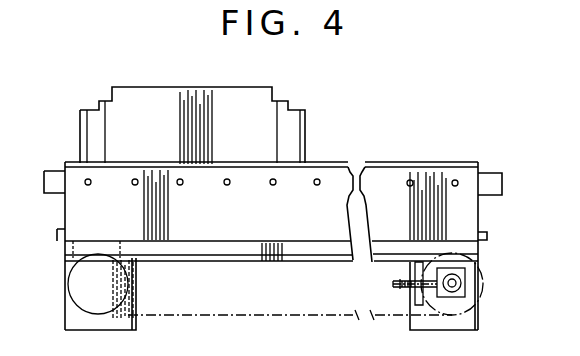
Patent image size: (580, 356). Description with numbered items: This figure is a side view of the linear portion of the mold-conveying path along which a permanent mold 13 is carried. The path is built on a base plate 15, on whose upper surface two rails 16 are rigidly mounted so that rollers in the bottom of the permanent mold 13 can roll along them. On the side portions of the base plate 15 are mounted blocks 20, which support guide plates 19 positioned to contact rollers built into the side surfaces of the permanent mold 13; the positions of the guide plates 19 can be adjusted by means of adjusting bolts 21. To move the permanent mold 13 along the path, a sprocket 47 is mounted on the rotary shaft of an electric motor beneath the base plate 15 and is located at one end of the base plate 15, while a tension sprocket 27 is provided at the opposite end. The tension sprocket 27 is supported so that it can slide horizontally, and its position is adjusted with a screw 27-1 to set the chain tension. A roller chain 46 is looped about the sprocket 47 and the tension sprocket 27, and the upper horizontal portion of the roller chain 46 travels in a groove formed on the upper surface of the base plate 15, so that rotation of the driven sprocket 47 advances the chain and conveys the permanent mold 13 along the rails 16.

The permanent mold 13 is at (186, 97).
The base plate 15 is at (243, 246).
The rails 16 is at (487, 231).
The guide plates 19 is at (492, 173).
The blocks 20 is at (465, 197).
The adjusting bolts 21 is at (319, 179).
The tension sprocket 27 is at (470, 307).
The screw 27-1 is at (405, 282).
The roller chain 46 is at (255, 315).
The sprocket 47 is at (72, 306).